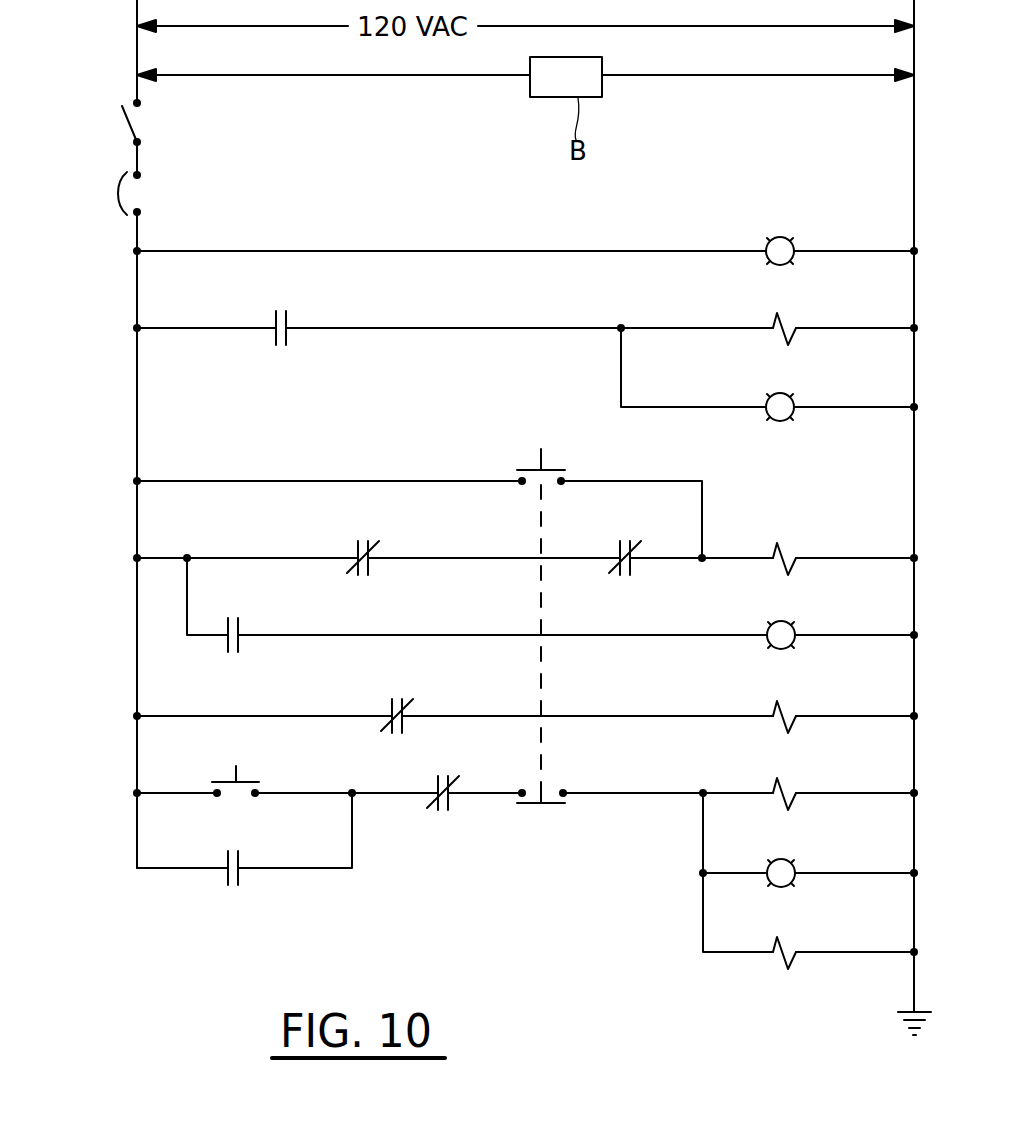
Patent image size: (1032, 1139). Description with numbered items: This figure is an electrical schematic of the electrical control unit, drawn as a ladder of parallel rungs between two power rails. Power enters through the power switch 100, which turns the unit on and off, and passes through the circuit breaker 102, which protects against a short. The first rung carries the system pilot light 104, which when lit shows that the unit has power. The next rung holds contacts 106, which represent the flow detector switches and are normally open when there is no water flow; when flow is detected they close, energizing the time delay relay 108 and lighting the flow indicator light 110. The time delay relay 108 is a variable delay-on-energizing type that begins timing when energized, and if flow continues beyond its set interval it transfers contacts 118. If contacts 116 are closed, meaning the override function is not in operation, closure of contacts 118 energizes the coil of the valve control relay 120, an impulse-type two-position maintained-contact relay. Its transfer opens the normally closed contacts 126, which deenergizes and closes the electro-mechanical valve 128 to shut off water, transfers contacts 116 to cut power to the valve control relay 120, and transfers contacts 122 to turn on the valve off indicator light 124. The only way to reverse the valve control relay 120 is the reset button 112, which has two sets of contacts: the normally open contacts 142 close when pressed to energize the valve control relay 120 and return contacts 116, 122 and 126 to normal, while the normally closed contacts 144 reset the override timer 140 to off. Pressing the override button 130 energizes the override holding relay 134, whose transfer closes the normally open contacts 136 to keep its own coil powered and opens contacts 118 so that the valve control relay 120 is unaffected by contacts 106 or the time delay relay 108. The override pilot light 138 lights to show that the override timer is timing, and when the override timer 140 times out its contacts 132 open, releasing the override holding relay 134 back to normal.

The power switch 100 is at (125, 118).
The circuit breaker 102 is at (118, 192).
The system pilot light 104 is at (788, 237).
The contacts 106 is at (289, 318).
The time delay relay 108 is at (788, 320).
The flow indicator light 110 is at (788, 394).
The reset button 112 is at (526, 467).
The contacts 116 is at (358, 548).
The contacts 118 is at (621, 549).
The valve control relay 120 is at (788, 548).
The contacts 122 is at (241, 628).
The valve off indicator light 124 is at (789, 623).
The contacts 126 is at (390, 707).
The electro-mechanical valve 128 is at (788, 708).
The override button 130 is at (250, 779).
The contacts 132 is at (437, 791).
The override holding relay 134 is at (788, 785).
The contacts 136 is at (243, 860).
The override pilot light 138 is at (789, 861).
The override timer 140 is at (788, 944).
The normally open contacts 142 is at (569, 474).
The normally closed contacts 144 is at (519, 800).